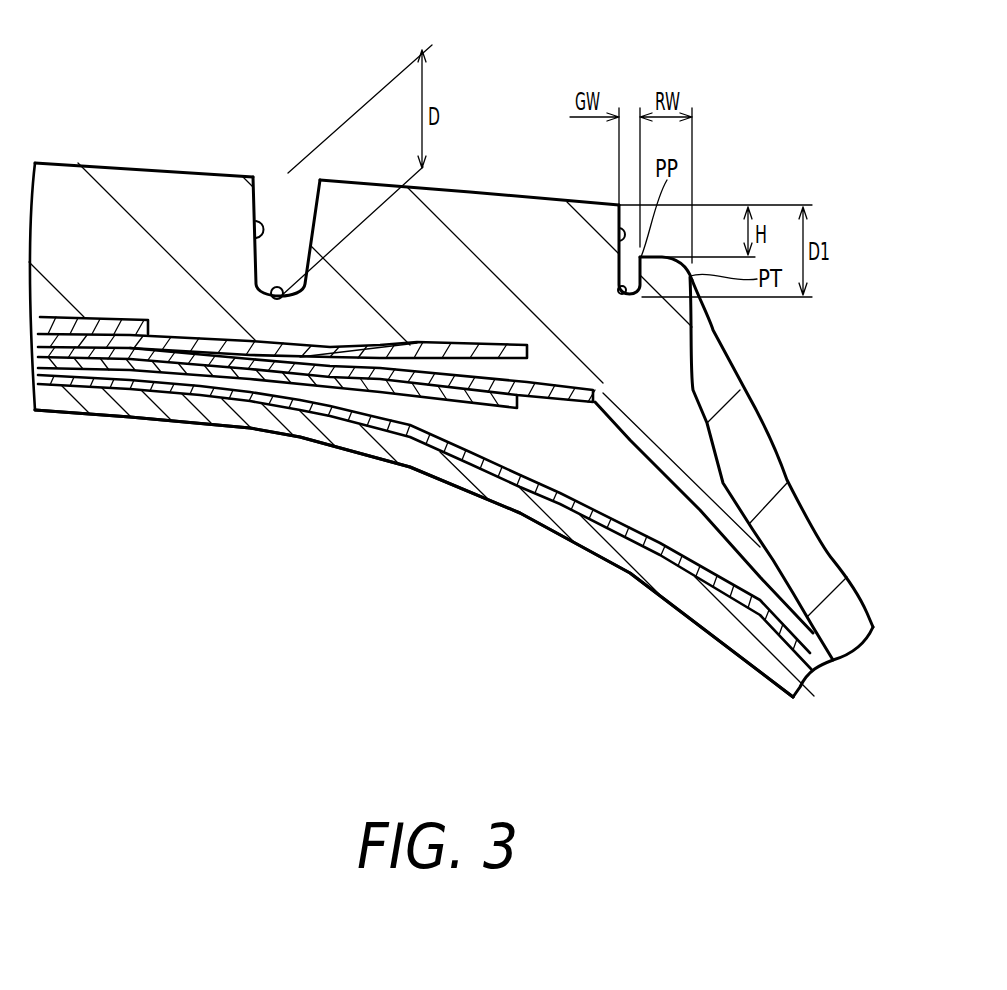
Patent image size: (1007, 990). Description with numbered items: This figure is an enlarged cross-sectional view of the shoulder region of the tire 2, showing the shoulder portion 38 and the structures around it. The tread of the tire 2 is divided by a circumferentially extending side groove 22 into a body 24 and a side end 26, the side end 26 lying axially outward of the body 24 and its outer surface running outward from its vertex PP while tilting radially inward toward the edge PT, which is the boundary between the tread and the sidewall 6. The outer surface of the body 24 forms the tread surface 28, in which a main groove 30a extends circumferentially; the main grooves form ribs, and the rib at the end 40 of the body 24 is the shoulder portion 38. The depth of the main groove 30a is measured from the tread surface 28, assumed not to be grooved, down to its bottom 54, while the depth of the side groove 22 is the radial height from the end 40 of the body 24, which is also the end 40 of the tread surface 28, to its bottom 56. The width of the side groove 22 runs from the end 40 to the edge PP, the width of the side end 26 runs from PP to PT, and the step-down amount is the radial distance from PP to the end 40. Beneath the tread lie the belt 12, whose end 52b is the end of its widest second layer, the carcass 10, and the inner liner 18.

The tire 2 is at (739, 119).
The sidewall 6 is at (763, 490).
The carcass 10 is at (358, 422).
The belt 12 is at (185, 334).
The inner liner 18 is at (492, 500).
The side groove 22 is at (619, 236).
The body 24 is at (452, 190).
The side end 26 is at (660, 257).
The tread surface 28 is at (116, 163).
The main groove 30a is at (255, 222).
The shoulder portion 38 is at (473, 190).
The end of the body 40 is at (619, 205).
The end of the second layer 52b is at (603, 393).
The bottom of the main groove 54 is at (269, 299).
The bottom of the side groove 56 is at (622, 295).